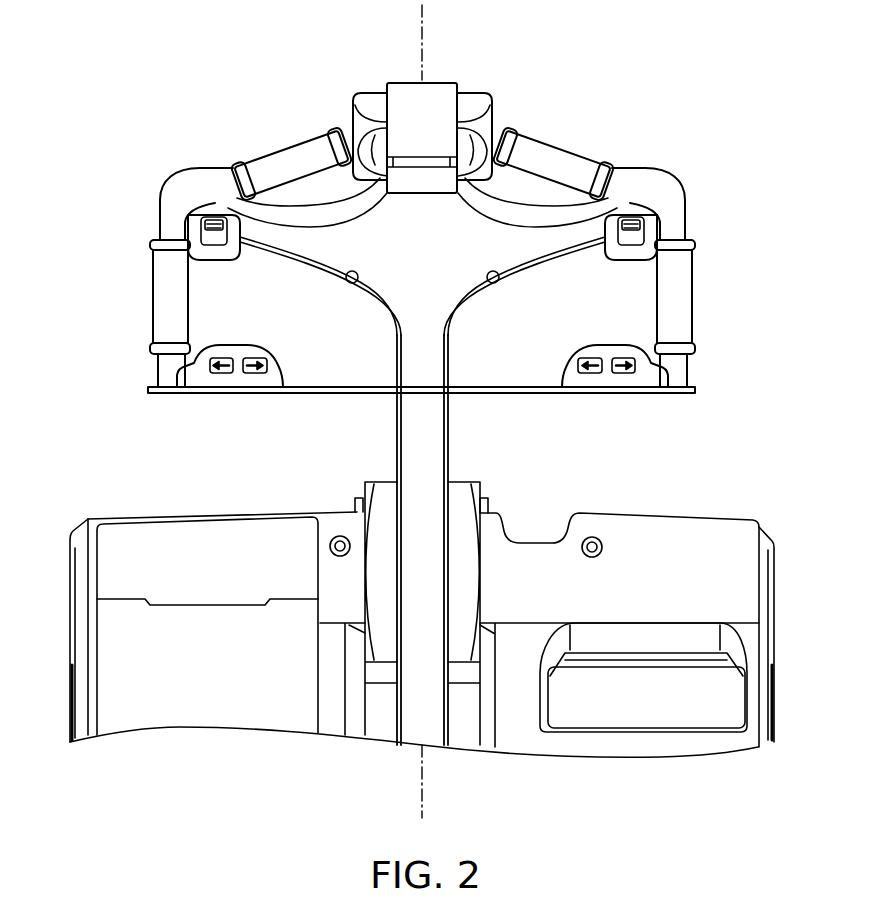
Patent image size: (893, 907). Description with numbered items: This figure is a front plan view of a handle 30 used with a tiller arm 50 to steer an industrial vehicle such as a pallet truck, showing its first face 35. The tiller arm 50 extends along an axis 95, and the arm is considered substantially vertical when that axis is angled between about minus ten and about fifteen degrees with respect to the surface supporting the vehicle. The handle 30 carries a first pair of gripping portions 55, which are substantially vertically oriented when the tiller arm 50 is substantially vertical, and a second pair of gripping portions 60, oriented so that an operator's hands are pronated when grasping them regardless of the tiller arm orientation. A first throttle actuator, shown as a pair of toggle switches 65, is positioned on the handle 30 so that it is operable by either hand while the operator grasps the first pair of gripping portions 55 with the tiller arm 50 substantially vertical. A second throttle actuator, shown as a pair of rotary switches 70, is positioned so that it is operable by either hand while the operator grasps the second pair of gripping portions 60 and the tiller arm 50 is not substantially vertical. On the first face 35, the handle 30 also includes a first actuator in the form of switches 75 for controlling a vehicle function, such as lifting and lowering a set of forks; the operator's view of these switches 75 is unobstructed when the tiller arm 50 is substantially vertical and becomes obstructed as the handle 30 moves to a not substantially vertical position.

The handle 30 is at (428, 80).
The first face 35 is at (125, 322).
The tiller arm 50 is at (411, 461).
The first pair of gripping portions 55 is at (162, 292).
The second pair of gripping portions 60 is at (290, 155).
The toggle switches 65 is at (219, 252).
The rotary switches 70 is at (367, 80).
The switches 75 is at (235, 383).
The axis 95 is at (420, 797).